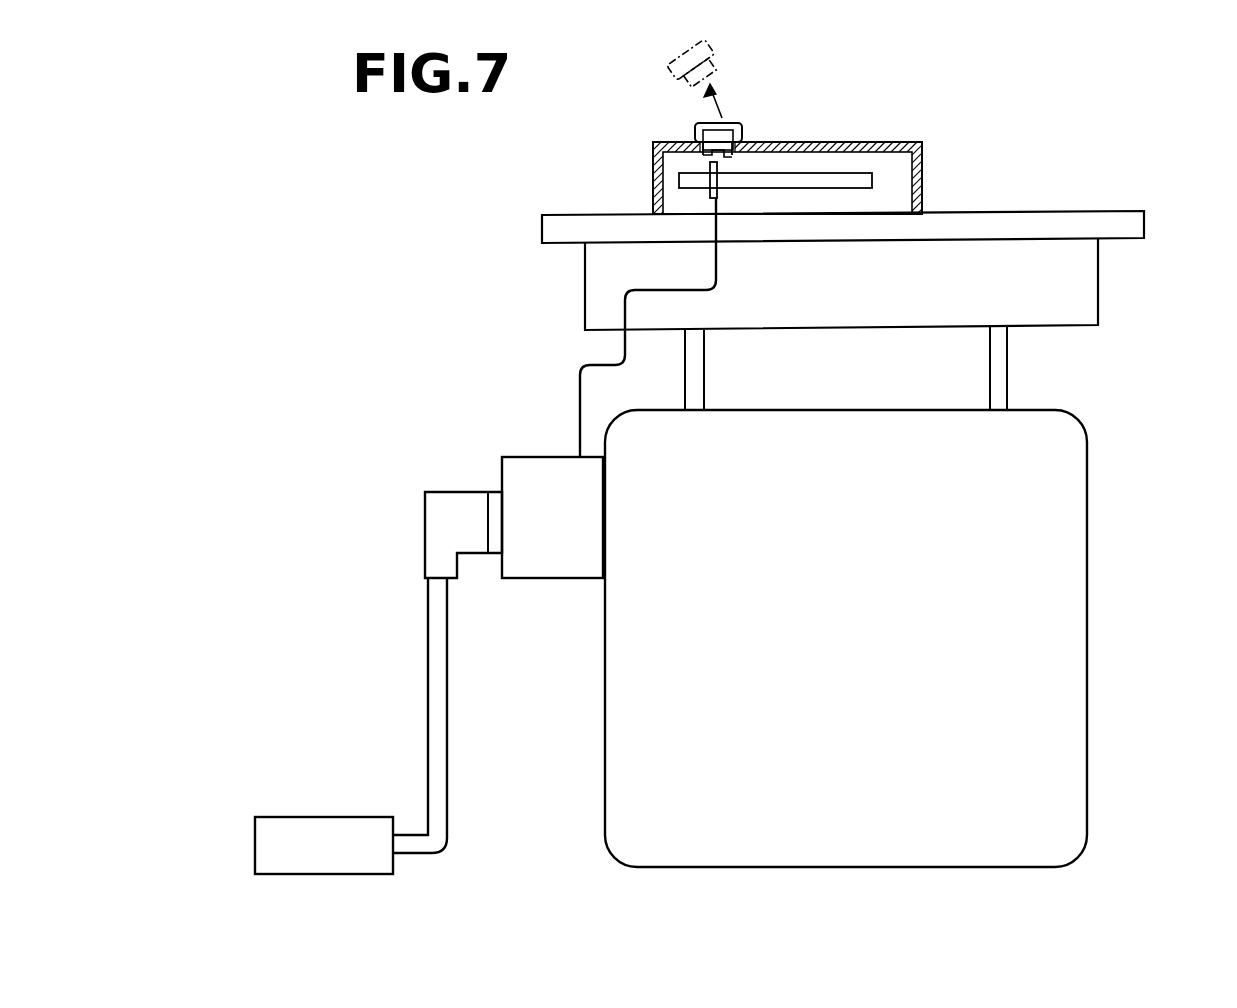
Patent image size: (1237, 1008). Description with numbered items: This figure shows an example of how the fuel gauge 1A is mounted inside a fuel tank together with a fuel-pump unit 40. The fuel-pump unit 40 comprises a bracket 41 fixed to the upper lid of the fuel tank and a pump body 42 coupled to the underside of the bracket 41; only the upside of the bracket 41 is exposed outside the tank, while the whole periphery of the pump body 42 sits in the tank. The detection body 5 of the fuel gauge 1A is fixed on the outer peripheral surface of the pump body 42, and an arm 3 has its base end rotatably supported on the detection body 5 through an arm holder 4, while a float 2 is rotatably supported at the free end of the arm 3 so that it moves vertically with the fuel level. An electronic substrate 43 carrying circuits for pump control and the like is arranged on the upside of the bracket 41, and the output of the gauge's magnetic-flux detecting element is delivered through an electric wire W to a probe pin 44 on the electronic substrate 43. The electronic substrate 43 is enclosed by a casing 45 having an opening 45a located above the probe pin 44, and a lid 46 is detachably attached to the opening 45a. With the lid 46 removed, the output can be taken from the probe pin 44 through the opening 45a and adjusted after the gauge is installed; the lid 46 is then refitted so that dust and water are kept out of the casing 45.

The fuel gauge 1A is at (460, 492).
The float 2 is at (328, 835).
The arm 3 is at (437, 682).
The arm holder 4 is at (445, 522).
The detection body 5 is at (557, 573).
The electric wire W is at (577, 403).
The fuel-pump unit 40 is at (889, 539).
The bracket 41 is at (1080, 295).
The pump body 42 is at (893, 638).
The electronic substrate 43 is at (828, 173).
The probe pin 44 is at (708, 167).
The casing 45 is at (873, 143).
The opening 45a is at (729, 121).
The lid 46 is at (712, 127).